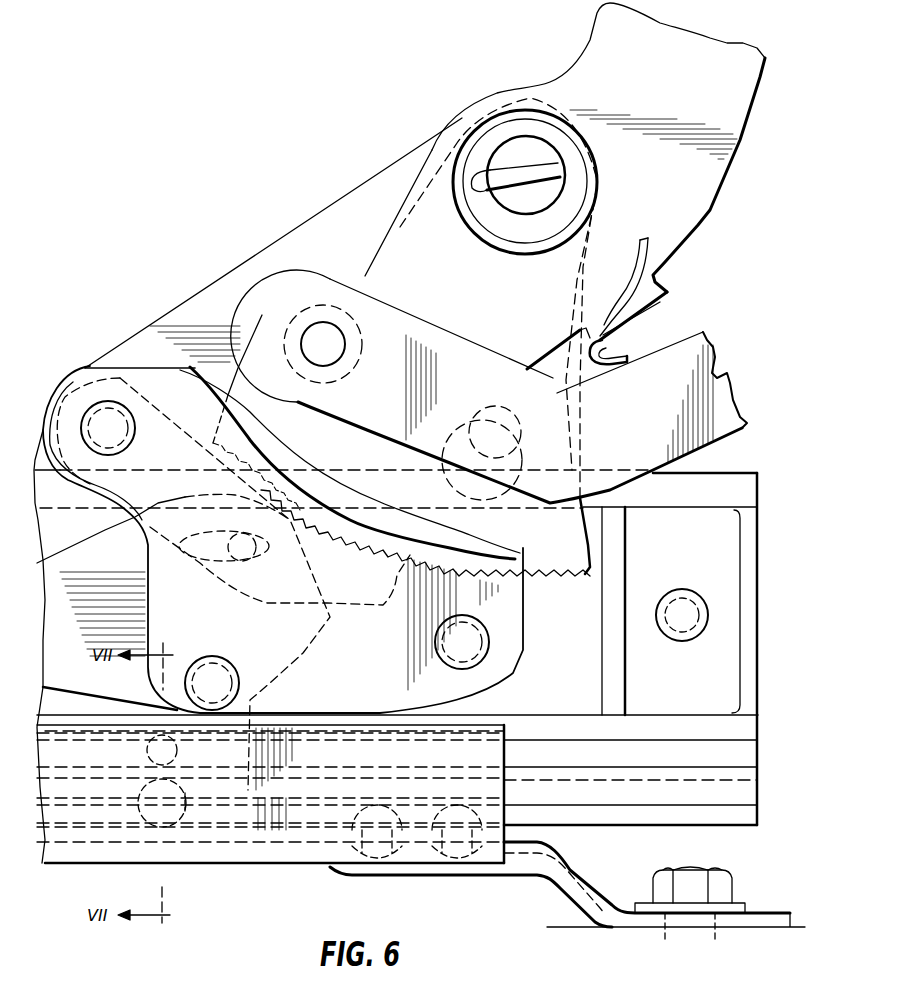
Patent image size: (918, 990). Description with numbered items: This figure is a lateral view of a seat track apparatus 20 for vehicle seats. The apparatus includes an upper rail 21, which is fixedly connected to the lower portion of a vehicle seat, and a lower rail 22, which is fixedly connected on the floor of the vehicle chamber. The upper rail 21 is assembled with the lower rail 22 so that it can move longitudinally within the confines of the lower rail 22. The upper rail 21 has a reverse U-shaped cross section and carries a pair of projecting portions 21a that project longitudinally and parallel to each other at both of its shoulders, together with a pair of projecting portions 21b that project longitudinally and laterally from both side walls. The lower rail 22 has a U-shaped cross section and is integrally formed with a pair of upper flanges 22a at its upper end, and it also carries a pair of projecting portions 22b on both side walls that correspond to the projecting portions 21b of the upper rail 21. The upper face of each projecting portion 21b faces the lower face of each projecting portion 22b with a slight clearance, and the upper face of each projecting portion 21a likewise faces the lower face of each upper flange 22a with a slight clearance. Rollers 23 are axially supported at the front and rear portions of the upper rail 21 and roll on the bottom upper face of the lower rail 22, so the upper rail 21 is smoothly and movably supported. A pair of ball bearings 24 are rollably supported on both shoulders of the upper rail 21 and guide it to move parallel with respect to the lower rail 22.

The seat track apparatus 20 is at (490, 710).
The upper rail 21 is at (753, 795).
The projecting portion 21a is at (648, 747).
The projecting portion 21b is at (640, 813).
The lower rail 22 is at (270, 852).
The upper flange 22a is at (330, 731).
The projecting portion 22b is at (253, 728).
The roller 23 is at (182, 815).
The ball bearing 24 is at (175, 757).